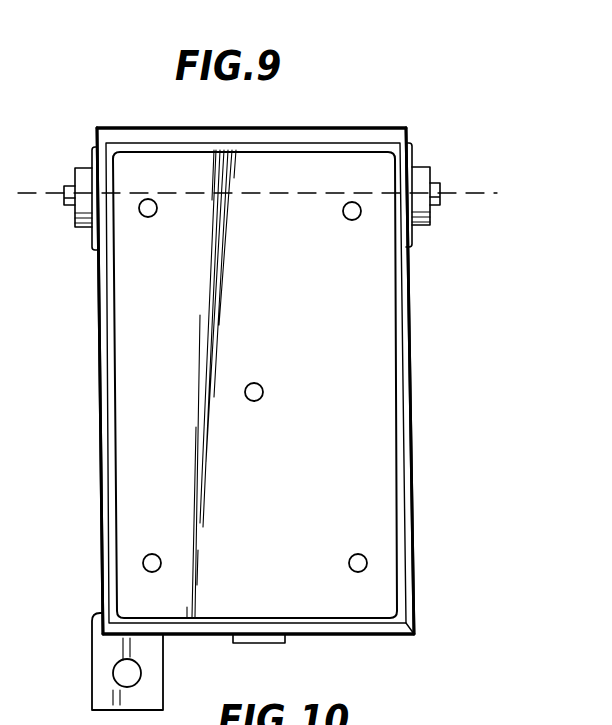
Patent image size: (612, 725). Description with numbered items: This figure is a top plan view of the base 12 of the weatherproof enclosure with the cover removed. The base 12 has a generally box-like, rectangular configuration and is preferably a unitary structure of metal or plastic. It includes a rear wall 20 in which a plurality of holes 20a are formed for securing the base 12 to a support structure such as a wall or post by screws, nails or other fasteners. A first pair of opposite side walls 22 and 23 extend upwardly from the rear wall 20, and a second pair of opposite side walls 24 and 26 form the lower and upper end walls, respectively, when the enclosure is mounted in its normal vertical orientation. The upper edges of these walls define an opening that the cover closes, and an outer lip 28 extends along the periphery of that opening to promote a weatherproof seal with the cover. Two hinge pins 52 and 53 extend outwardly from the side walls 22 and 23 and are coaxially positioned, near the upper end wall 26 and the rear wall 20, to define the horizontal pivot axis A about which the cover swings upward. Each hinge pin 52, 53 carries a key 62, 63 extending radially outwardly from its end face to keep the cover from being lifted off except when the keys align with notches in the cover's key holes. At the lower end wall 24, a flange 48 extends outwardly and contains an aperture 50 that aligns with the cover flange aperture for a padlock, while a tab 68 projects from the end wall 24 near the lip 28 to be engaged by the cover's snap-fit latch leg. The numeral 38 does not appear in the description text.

In FIG. 9, the base 12 is at (287, 409).
In FIG. 9, the rear wall 20 is at (278, 381).
In FIG. 9, the holes 20a is at (153, 215).
In FIG. 9, the side wall 22 is at (388, 435).
In FIG. 9, the side wall 23 is at (122, 432).
In FIG. 9, the end wall 24 is at (348, 613).
In FIG. 9, the end wall 26 is at (281, 152).
In FIG. 9, the outer lip 28 is at (414, 610).
In FIG. 9, the flange 48 is at (127, 669).
In FIG. 9, the aperture 50 is at (138, 684).
In FIG. 9, the hinge pin 52 is at (421, 167).
In FIG. 9, the hinge pin 53 is at (78, 168).
In FIG. 9, the key 62 is at (434, 205).
In FIG. 9, the key 63 is at (64, 197).
In FIG. 9, the tab 68 is at (285, 644).
In FIG. 10, the element of FIG. 10 38 is at (360, 724).
In FIG. 9, the pivot axis A is at (264, 194).